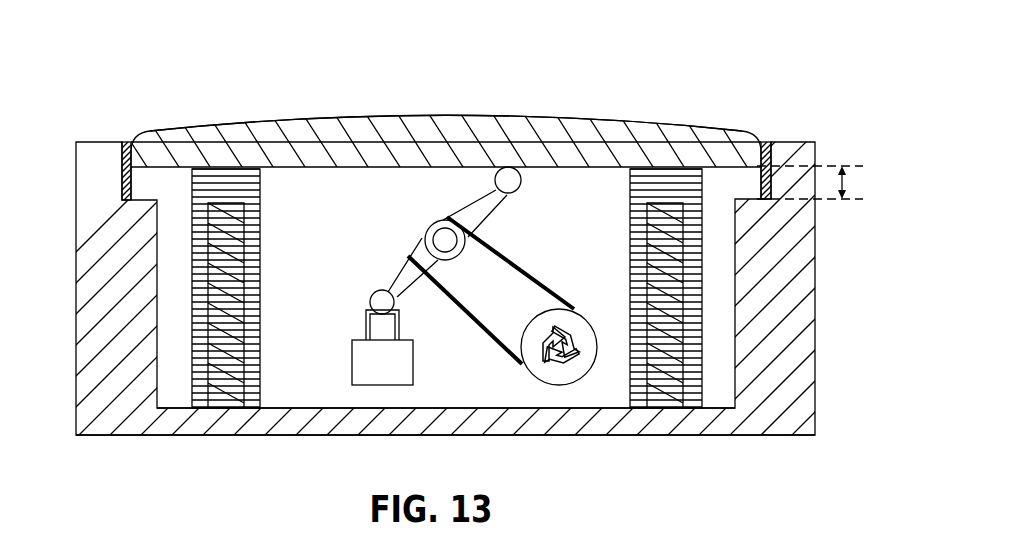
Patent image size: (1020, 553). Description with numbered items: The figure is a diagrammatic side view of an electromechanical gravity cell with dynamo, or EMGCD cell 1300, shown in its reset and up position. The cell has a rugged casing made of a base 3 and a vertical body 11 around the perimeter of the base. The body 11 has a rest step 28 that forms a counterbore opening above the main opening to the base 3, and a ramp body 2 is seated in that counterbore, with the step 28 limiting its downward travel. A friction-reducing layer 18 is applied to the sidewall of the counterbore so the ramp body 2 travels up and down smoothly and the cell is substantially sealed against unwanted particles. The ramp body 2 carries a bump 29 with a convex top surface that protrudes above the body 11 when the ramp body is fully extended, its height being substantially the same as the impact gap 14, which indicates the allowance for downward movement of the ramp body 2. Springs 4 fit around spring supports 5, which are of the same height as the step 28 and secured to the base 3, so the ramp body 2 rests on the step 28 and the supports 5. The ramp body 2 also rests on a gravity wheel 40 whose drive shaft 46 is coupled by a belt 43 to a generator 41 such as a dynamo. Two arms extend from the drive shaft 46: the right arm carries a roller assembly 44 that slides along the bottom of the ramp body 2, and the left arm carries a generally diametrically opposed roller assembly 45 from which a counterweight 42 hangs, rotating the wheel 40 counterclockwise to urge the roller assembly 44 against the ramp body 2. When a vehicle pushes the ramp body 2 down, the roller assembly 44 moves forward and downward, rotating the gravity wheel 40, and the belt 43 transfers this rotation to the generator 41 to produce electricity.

The electromechanical gravity cell with dynamo 1300 is at (788, 36).
The ramp body 2 is at (410, 150).
The bump 29 is at (480, 123).
The base 3 is at (622, 428).
The body 11 is at (78, 234).
The impact gap 14 is at (848, 181).
The friction-reducing layer 18 is at (131, 143).
The rest step 28 is at (143, 198).
The spring 4 is at (208, 195).
The spring support 5 is at (229, 203).
The gravity wheel 40 is at (376, 234).
The generator 41 is at (580, 313).
The counterweight 42 is at (352, 368).
The belt 43 is at (533, 277).
The roller assembly 44 is at (521, 182).
The roller assembly 45 is at (369, 300).
The drive shaft 46 is at (437, 230).